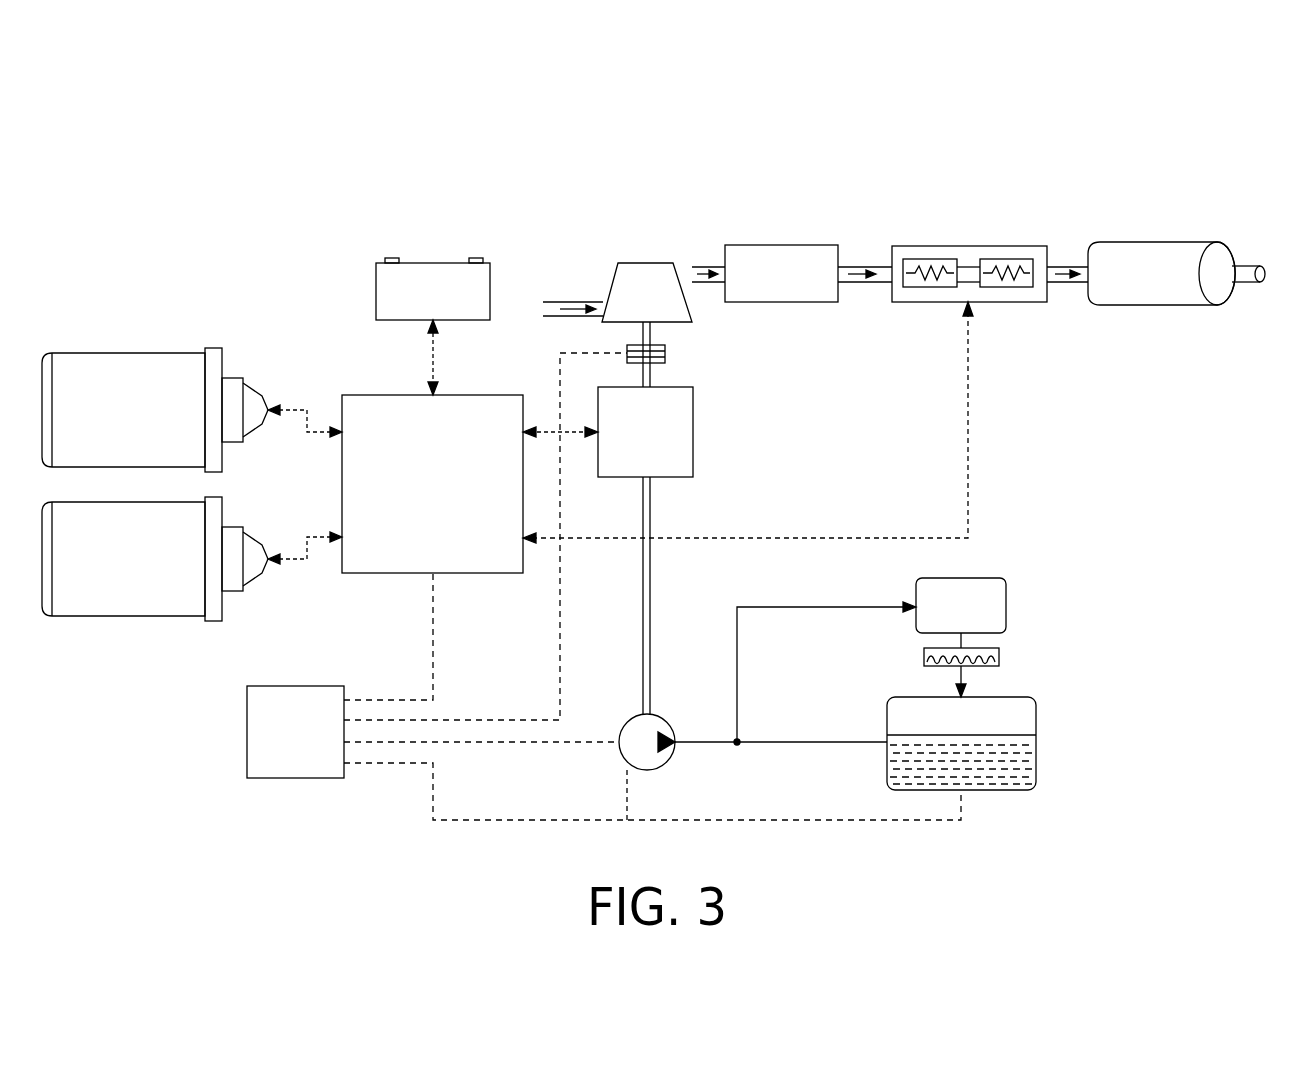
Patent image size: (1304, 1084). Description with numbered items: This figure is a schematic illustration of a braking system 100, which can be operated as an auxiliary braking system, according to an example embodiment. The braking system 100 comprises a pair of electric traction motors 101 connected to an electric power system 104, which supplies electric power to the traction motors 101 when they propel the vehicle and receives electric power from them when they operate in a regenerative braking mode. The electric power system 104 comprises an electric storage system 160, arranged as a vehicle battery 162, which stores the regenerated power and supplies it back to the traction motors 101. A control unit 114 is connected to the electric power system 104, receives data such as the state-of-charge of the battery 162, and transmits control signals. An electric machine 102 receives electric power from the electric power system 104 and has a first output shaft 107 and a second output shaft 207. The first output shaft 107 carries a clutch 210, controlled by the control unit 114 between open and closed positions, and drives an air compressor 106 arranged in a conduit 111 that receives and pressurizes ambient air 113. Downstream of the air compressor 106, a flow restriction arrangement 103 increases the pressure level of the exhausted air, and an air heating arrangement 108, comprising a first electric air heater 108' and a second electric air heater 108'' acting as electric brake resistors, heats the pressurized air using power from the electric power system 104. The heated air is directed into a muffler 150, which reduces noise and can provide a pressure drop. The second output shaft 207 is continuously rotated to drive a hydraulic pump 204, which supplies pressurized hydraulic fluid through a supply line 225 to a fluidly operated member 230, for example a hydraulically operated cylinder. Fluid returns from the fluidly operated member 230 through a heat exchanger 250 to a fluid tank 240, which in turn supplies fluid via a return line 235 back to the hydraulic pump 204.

The braking system 100 is at (700, 140).
The electric traction motor 101 is at (127, 353).
The electric machine 102 is at (695, 432).
The flow restriction arrangement 103 is at (776, 245).
The electric power system 104 is at (483, 573).
The air compressor 106 is at (641, 263).
The first output shaft 107 is at (652, 330).
The air heating arrangement 108 is at (969, 233).
The first electric air heater 108' is at (910, 315).
The second electric air heater 108'' is at (1033, 315).
The conduit 111 is at (590, 302).
The ambient air 113 is at (573, 316).
The control unit 114 is at (247, 732).
The muffler 150 is at (1157, 242).
The electric storage system 160 is at (415, 263).
The battery 162 is at (457, 293).
The hydraulic pump 204 is at (650, 770).
The second output shaft 207 is at (652, 587).
The clutch 210 is at (674, 352).
The supply line 225 is at (816, 607).
The fluidly operated member 230 is at (1008, 607).
The return line 235 is at (816, 742).
The fluid tank 240 is at (1038, 718).
The heat exchanger 250 is at (1000, 657).